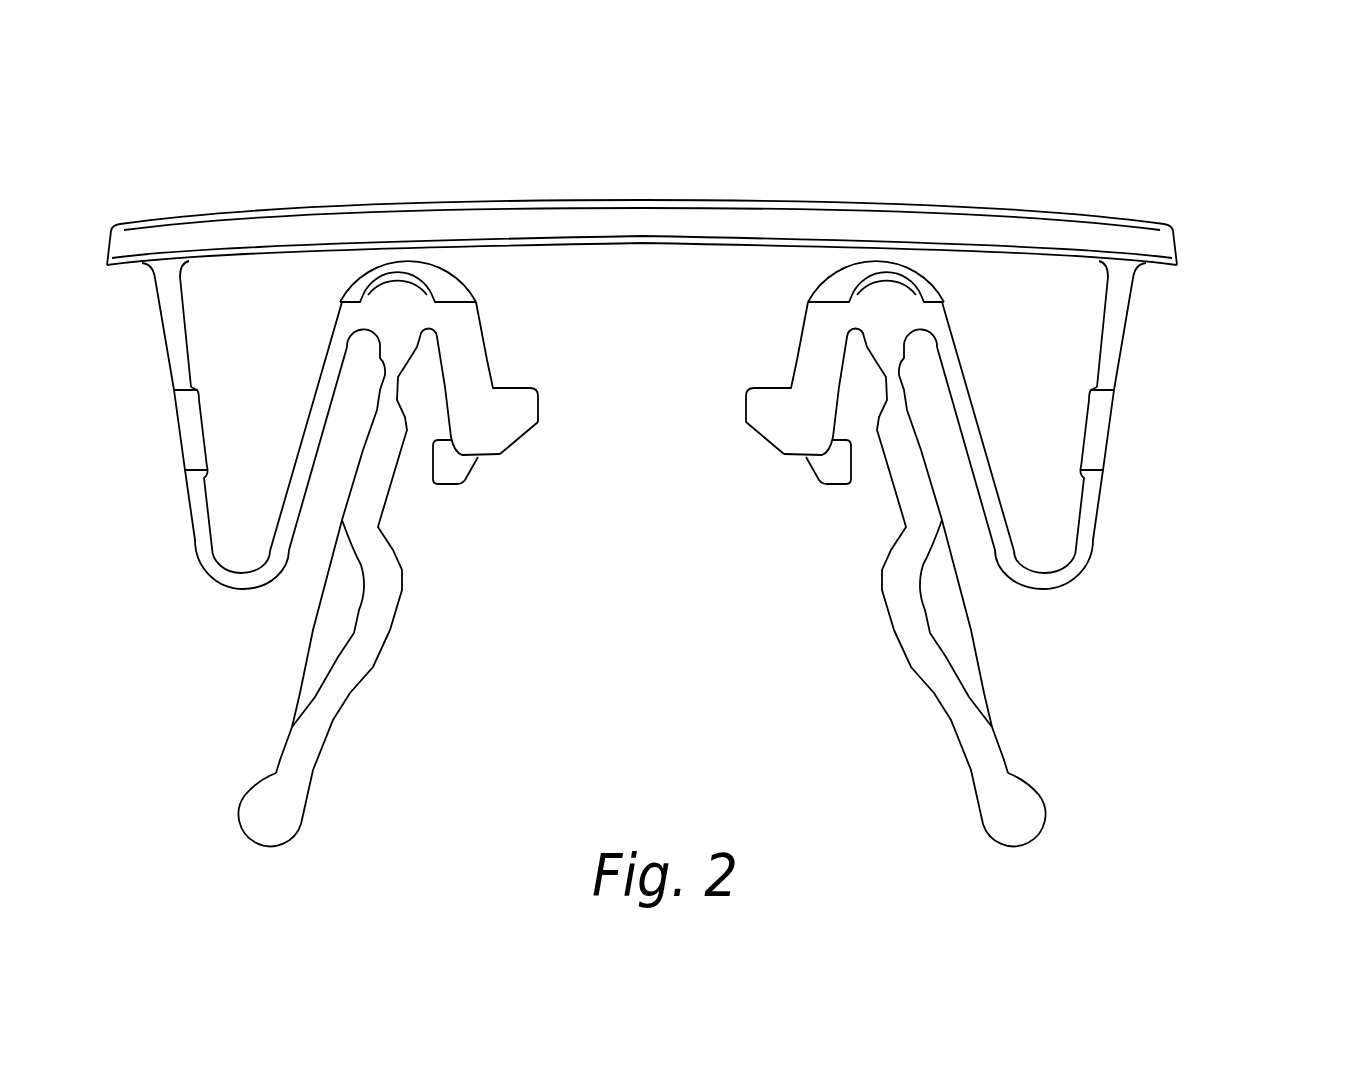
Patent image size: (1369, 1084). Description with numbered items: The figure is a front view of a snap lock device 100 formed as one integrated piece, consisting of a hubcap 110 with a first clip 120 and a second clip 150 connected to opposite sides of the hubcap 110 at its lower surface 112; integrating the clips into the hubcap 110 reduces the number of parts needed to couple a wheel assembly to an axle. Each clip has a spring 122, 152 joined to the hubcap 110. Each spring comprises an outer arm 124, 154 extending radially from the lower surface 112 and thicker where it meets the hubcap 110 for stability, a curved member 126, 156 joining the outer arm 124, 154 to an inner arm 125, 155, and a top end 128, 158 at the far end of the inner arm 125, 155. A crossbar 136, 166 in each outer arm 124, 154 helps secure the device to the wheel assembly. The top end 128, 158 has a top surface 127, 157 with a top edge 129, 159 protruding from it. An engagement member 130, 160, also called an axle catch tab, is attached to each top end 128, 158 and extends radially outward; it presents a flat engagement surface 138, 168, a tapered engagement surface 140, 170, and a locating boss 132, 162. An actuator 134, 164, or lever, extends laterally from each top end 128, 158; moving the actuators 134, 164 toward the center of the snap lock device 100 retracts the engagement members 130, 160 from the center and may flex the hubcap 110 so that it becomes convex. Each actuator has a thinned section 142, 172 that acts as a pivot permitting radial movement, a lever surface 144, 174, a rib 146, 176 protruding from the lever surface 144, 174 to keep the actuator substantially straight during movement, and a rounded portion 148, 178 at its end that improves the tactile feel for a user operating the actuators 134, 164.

The snap lock device 100 is at (1255, 234).
The hubcap 110 is at (181, 222).
The lower surface 112 is at (660, 244).
The first clip 120 is at (298, 690).
The spring 122 is at (160, 312).
The outer arm 124 is at (190, 517).
The inner arm 125 is at (194, 389).
The curved member 126 is at (203, 573).
The top surface 127 is at (393, 272).
The top end 128 is at (470, 260).
The top edge 129 is at (430, 261).
The engagement member 130 is at (502, 448).
The locating boss 132 is at (443, 483).
The actuator 134 is at (276, 772).
The crossbar 136 is at (180, 440).
The flat engagement surface 138 is at (518, 388).
The tapered engagement surface 140 is at (533, 428).
The thinned section 142 is at (381, 387).
The lever surface 144 is at (303, 727).
The rib 146 is at (313, 637).
The rounded portion 148 is at (298, 824).
The second clip 150 is at (984, 690).
The spring 152 is at (1118, 359).
The outer arm 154 is at (1094, 535).
The inner arm 155 is at (1076, 493).
The curved member 156 is at (1052, 588).
The top surface 157 is at (892, 273).
The top end 158 is at (814, 260).
The top edge 159 is at (859, 262).
The engagement member 160 is at (798, 450).
The locating boss 162 is at (841, 483).
The actuator 164 is at (1008, 772).
The crossbar 166 is at (1110, 410).
The flat engagement surface 168 is at (768, 388).
The tapered engagement surface 170 is at (751, 428).
The thinned section 172 is at (904, 387).
The lever surface 174 is at (978, 730).
The rib 176 is at (968, 634).
The rounded portion 178 is at (986, 824).